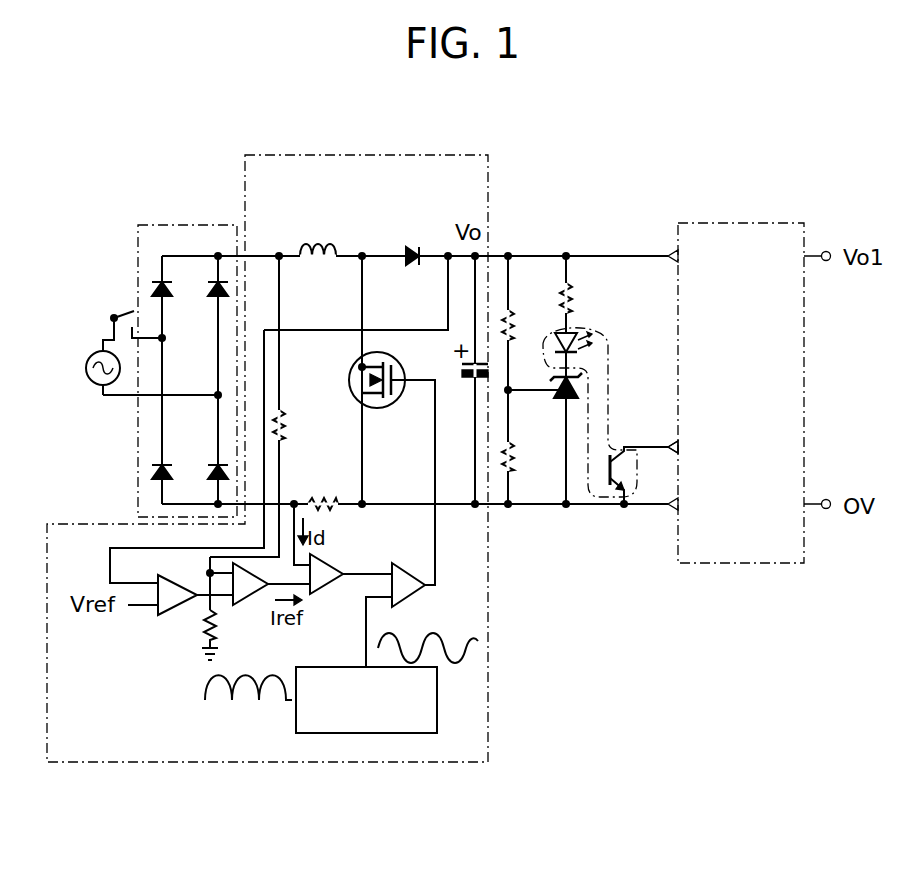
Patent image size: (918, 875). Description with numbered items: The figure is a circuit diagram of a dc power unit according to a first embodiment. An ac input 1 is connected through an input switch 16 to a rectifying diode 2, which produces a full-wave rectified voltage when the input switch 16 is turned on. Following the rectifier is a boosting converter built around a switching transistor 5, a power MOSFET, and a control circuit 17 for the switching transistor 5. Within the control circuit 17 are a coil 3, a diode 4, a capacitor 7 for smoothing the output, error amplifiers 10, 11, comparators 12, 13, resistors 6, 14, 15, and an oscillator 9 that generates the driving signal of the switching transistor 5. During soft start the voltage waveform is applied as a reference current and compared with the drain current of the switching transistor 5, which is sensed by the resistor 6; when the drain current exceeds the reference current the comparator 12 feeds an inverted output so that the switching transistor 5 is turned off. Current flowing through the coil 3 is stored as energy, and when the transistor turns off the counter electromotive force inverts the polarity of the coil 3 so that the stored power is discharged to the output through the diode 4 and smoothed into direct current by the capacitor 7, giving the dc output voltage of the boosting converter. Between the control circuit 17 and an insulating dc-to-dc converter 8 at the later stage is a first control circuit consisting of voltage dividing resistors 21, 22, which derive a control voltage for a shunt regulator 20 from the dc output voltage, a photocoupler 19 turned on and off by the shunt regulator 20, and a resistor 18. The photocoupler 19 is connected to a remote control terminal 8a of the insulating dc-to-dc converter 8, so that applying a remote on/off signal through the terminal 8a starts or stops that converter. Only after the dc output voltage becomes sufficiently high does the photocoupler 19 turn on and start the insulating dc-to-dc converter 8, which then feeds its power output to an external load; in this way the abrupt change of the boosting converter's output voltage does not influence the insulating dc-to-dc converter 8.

The ac input 1 is at (95, 392).
The rectifying diode 2 is at (200, 222).
The coil 3 is at (322, 250).
The diode 4 is at (412, 250).
The switching transistor 5 is at (362, 365).
The resistor 6 is at (314, 498).
The capacitor 7 is at (470, 380).
The insulating dc-to-dc converter 8 is at (750, 222).
The remote control terminal 8a is at (655, 452).
The oscillator 9 is at (296, 718).
The error amplifier 10 is at (155, 612).
The error amplifier 11 is at (246, 602).
The comparator 12 is at (332, 592).
The comparator 13 is at (404, 566).
The resistor 14 is at (290, 416).
The resistor 15 is at (200, 630).
The input switch 16 is at (116, 315).
The control circuit 17 is at (492, 600).
The resistor 18 is at (577, 298).
The photocoupler 19 is at (609, 338).
The shunt regulator 20 is at (581, 378).
The voltage dividing resistor 21 is at (511, 312).
The voltage dividing resistor 22 is at (542, 430).